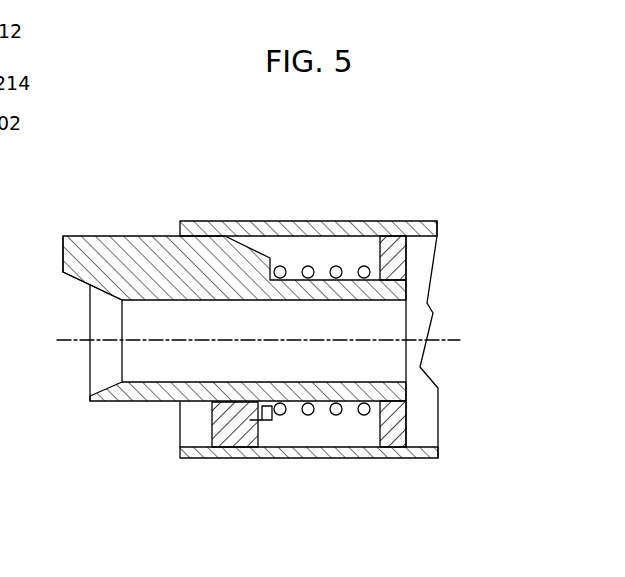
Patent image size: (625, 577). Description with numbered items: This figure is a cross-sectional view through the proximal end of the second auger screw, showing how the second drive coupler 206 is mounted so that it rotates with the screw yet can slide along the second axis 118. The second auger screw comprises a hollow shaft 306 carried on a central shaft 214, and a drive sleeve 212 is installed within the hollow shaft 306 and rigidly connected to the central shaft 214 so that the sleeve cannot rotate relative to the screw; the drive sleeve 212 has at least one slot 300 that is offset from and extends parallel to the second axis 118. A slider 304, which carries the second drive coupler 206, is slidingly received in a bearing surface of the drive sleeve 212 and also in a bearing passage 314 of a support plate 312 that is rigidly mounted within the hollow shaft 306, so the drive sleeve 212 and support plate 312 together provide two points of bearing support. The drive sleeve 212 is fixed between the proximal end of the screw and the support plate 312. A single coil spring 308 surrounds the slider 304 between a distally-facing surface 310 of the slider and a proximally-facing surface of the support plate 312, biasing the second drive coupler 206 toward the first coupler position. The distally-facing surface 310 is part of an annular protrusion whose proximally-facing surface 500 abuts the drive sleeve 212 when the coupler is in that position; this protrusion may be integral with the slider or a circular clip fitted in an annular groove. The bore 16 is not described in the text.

The bore 16 is at (142, 380).
The second axis 118 is at (73, 341).
The second drive coupler 206 is at (120, 236).
The drive sleeve 212 is at (217, 427).
The central shaft 214 is at (432, 221).
The slot 300 is at (252, 245).
The slider 304 is at (108, 400).
The hollow shaft 306 is at (212, 221).
The coil spring 308 is at (310, 268).
The distally-facing surface 310 is at (268, 418).
The support plate 312 is at (392, 235).
The bearing passage 314 is at (406, 281).
The proximally-facing surface 500 is at (262, 410).